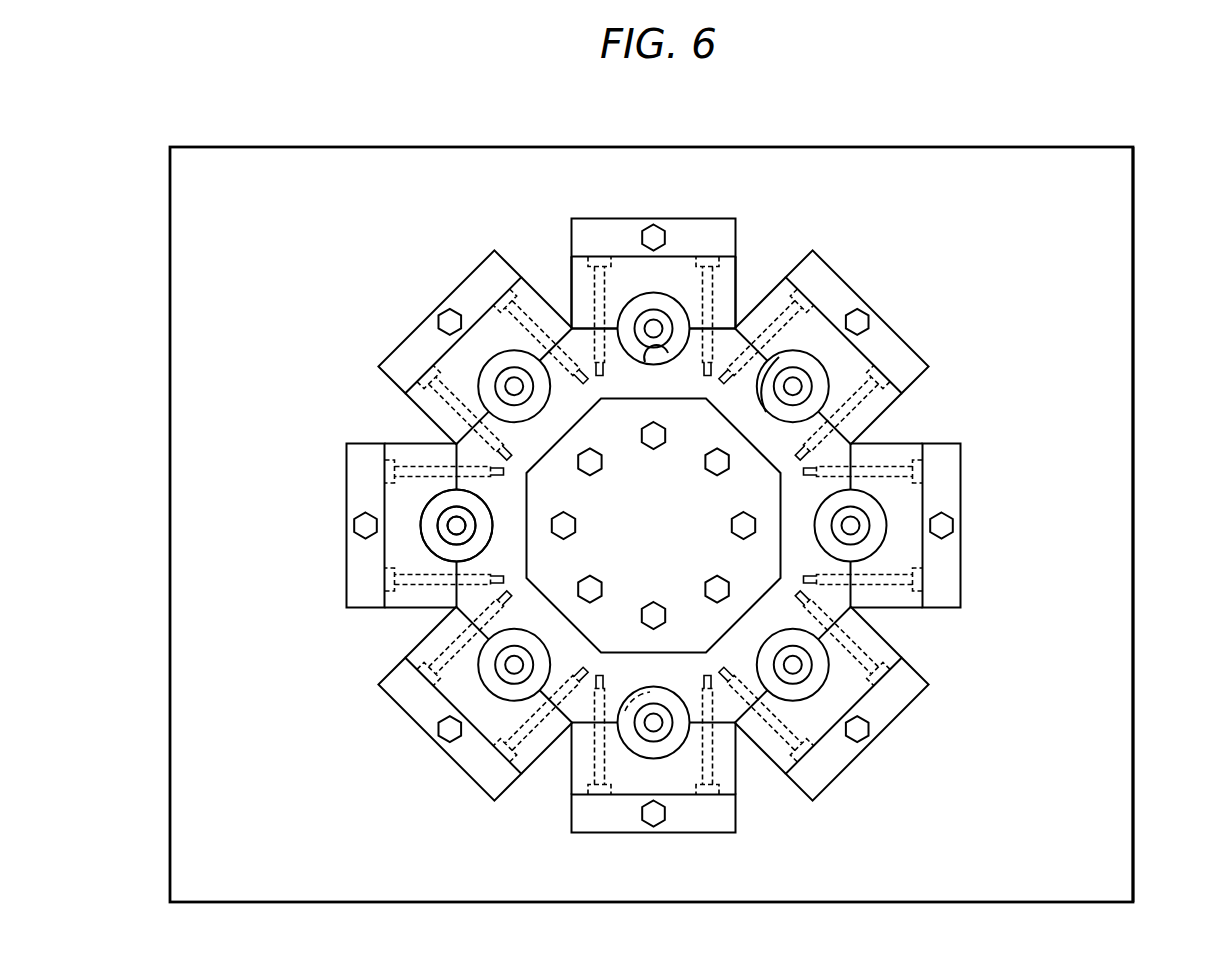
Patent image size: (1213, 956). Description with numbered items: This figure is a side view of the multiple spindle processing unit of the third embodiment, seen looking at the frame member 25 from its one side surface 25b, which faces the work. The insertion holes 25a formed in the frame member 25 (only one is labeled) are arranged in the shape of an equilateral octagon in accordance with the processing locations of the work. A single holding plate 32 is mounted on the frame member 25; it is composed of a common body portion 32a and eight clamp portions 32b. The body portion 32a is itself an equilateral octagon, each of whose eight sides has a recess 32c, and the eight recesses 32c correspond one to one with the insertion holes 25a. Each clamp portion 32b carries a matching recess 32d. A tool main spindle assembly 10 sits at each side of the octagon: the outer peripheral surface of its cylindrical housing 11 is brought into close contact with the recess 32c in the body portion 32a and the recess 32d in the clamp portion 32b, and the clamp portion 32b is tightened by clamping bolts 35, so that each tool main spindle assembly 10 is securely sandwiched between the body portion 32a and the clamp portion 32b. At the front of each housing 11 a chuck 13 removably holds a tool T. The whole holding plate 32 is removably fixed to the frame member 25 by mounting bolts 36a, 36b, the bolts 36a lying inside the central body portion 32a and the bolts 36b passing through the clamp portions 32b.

The tool main spindle assembly 10 is at (676, 290).
The housing 11 is at (482, 504).
The chuck 13 is at (476, 531).
The tool T is at (441, 534).
The frame member 25 is at (1120, 178).
The insertion hole 25a is at (640, 700).
The one side surface 25b is at (1120, 333).
The holding plate 32 is at (745, 300).
The body portion 32a is at (583, 345).
The clamp portion 32b is at (628, 268).
The recess 32c is at (646, 360).
The recess 32d is at (766, 414).
The clamping bolt 35 is at (870, 407).
The mounting bolt 36a is at (655, 449).
The mounting bolt 36b is at (441, 318).